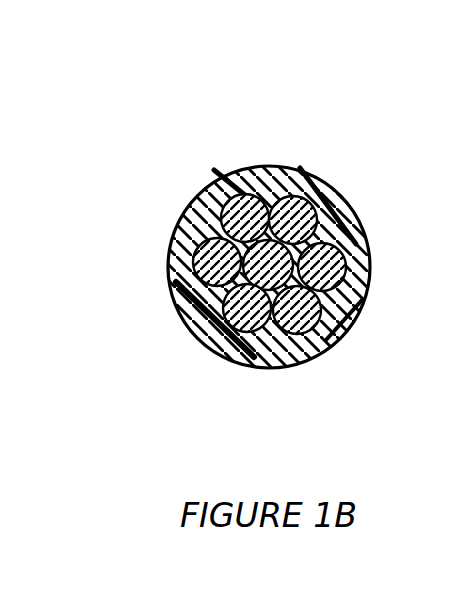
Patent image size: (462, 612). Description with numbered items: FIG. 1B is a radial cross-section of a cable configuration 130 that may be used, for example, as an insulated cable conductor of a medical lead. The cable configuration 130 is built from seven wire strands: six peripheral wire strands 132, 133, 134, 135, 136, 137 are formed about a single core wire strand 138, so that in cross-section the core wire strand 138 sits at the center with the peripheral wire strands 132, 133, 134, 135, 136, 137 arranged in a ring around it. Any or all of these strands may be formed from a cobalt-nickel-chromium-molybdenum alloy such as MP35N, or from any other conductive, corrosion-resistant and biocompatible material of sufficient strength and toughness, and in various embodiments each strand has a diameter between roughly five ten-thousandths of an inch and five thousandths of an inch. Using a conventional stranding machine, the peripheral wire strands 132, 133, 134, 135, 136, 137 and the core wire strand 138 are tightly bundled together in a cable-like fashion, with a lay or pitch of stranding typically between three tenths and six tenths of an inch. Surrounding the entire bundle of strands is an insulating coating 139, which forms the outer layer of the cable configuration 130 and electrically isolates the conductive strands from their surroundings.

The cable configuration 130 is at (268, 85).
The peripheral wire strand 132 is at (279, 368).
The peripheral wire strand 133 is at (266, 362).
The peripheral wire strand 134 is at (176, 282).
The peripheral wire strand 135 is at (232, 212).
The peripheral wire strand 136 is at (300, 213).
The peripheral wire strand 137 is at (331, 248).
The core wire strand 138 is at (328, 302).
The insulating coating 139 is at (207, 320).